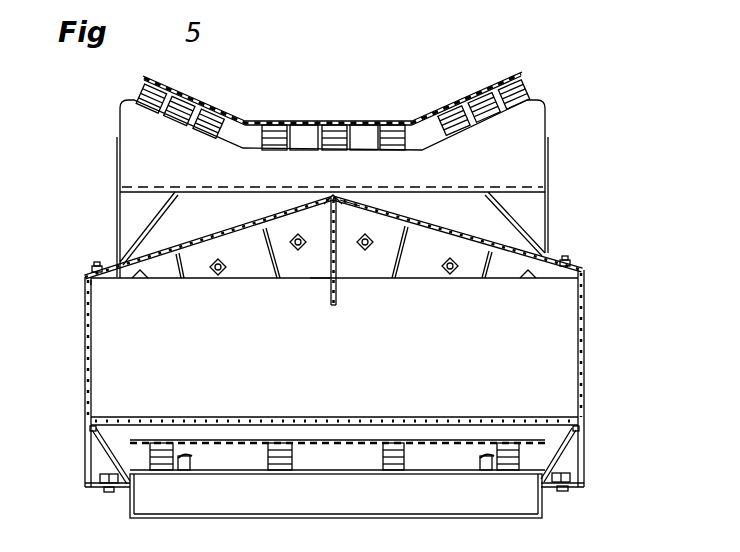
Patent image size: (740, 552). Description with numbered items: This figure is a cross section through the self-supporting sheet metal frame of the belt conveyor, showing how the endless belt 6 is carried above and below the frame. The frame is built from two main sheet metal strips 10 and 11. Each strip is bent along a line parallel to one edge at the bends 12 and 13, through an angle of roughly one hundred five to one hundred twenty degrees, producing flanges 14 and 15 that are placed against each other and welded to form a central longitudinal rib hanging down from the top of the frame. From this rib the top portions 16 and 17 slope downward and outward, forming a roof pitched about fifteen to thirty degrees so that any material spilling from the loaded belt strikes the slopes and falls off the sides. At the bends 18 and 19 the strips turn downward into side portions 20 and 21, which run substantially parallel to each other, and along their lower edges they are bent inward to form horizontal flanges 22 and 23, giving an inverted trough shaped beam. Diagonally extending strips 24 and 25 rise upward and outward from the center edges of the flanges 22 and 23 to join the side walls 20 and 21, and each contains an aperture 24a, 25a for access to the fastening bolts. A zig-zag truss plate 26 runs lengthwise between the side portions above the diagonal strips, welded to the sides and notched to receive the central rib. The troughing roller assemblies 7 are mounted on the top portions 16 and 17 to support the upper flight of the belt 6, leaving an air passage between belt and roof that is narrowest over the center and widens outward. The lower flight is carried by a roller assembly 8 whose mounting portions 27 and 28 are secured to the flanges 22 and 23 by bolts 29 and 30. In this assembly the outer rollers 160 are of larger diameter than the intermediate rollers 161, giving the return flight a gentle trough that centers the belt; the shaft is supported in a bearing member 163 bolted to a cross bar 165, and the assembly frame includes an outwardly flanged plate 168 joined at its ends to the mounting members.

The endless belt 6 is at (345, 121).
The troughing roller assemblies 7 is at (118, 172).
The roller assemblies 8 is at (158, 518).
The main sheet metal strip 10 is at (82, 293).
The main sheet metal strip 11 is at (588, 314).
The bend 12 is at (330, 212).
The bend 13 is at (346, 206).
The flange 14 is at (331, 268).
The flange 15 is at (338, 265).
The top portion 16 is at (236, 234).
The top portion 17 is at (410, 226).
The bend 18 is at (88, 276).
The bend 19 is at (585, 270).
The side portion 20 is at (88, 350).
The side portion 21 is at (585, 354).
The horizontal flange 22 is at (98, 477).
The horizontal flange 23 is at (585, 478).
The diagonally extending strip 24 is at (92, 428).
The aperture 24a is at (102, 454).
The diagonally extending strip 25 is at (580, 433).
The aperture 25a is at (560, 452).
The truss plate 26 is at (288, 417).
The mounting portion 27 is at (95, 490).
The mounting portion 28 is at (548, 488).
The bolt 29 is at (108, 493).
The bolt 30 is at (568, 492).
The outer rollers 160 is at (150, 466).
The intermediate rollers 161 is at (268, 460).
The bearing member 163 is at (190, 467).
The cross bar 165 is at (190, 457).
The plate 168 is at (354, 514).